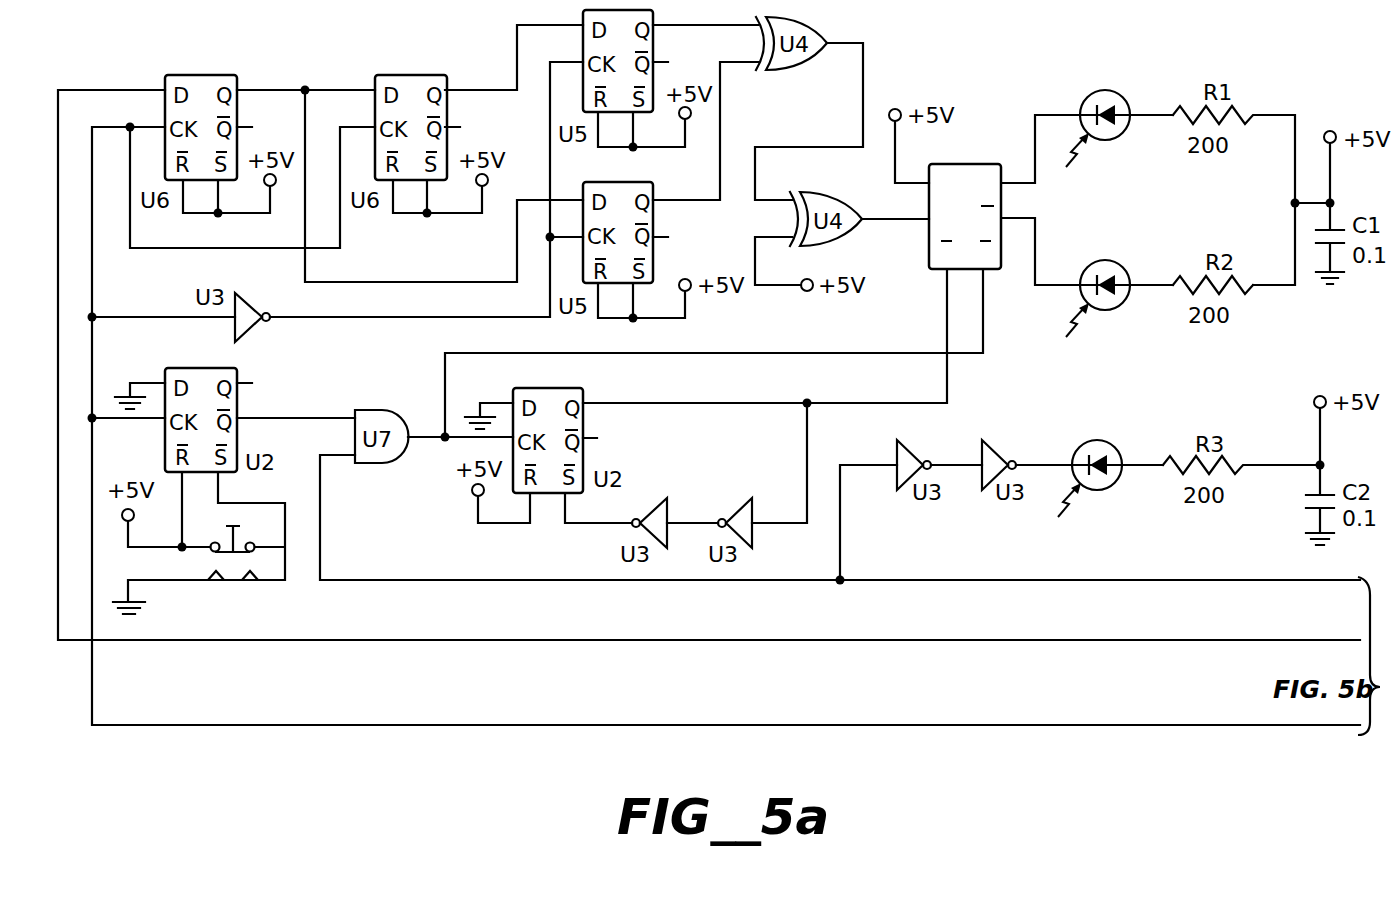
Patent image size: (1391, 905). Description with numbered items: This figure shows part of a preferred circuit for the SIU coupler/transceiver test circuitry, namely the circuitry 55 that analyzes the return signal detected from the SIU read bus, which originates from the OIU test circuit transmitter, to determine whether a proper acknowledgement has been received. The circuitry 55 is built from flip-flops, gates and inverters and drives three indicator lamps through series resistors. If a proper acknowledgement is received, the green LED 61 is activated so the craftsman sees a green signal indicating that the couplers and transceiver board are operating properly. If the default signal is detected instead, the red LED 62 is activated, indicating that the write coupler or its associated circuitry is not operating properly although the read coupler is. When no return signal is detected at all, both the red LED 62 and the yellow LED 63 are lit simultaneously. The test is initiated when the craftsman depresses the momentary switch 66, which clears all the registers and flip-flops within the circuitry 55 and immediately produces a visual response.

The circuitry 55 is at (1004, 62).
The green LED 61 is at (1115, 136).
The red LED 62 is at (1115, 306).
The yellow LED 63 is at (1108, 487).
The momentary switch 66 is at (280, 596).